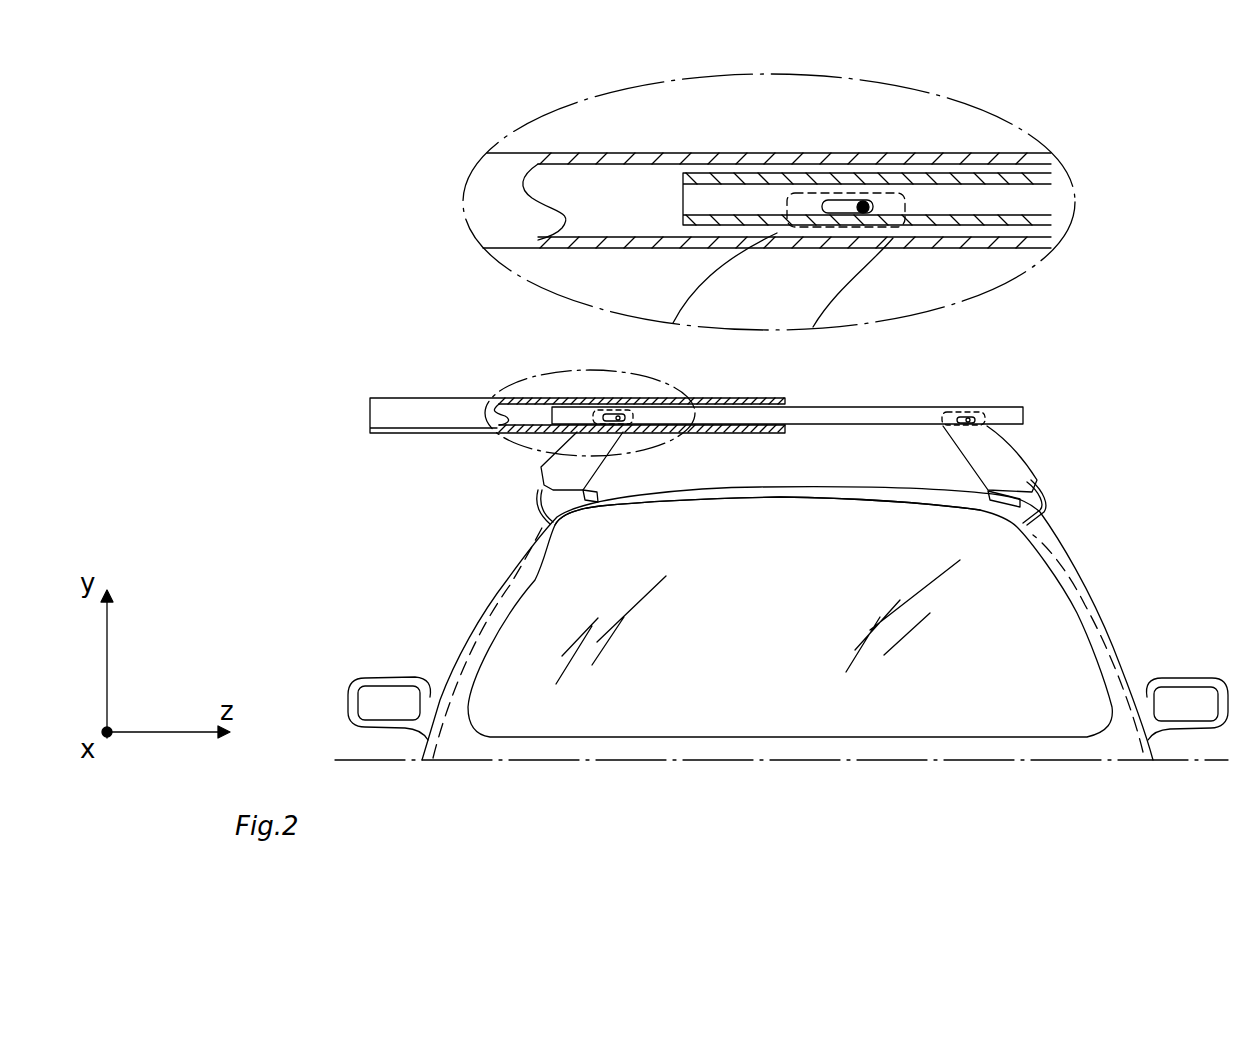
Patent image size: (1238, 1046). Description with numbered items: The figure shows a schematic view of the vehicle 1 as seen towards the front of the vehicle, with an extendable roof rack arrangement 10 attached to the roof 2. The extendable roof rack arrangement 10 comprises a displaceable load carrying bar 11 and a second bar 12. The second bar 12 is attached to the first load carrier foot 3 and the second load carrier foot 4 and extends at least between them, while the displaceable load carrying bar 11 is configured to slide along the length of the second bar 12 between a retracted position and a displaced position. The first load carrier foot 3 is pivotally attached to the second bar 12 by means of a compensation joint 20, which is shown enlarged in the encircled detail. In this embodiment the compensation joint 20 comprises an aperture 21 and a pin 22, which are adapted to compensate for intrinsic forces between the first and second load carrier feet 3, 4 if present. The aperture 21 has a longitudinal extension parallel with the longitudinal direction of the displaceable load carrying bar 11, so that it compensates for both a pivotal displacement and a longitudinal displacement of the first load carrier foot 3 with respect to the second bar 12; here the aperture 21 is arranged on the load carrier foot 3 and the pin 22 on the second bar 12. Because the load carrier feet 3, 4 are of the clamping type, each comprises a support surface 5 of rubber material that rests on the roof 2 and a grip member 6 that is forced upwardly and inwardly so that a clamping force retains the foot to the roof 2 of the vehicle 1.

The vehicle 1 is at (421, 590).
The roof 2 is at (840, 485).
The first load carrier foot 3 is at (553, 468).
The second load carrier foot 4 is at (1000, 455).
The support surface 5 is at (583, 500).
The grip member 6 is at (538, 493).
The extendable roof rack arrangement 10 is at (405, 373).
The displaceable load carrying bar 11 is at (462, 412).
The second bar 12 is at (870, 413).
The compensation joint 20 is at (820, 208).
The aperture 21 is at (828, 203).
The pin 22 is at (876, 211).